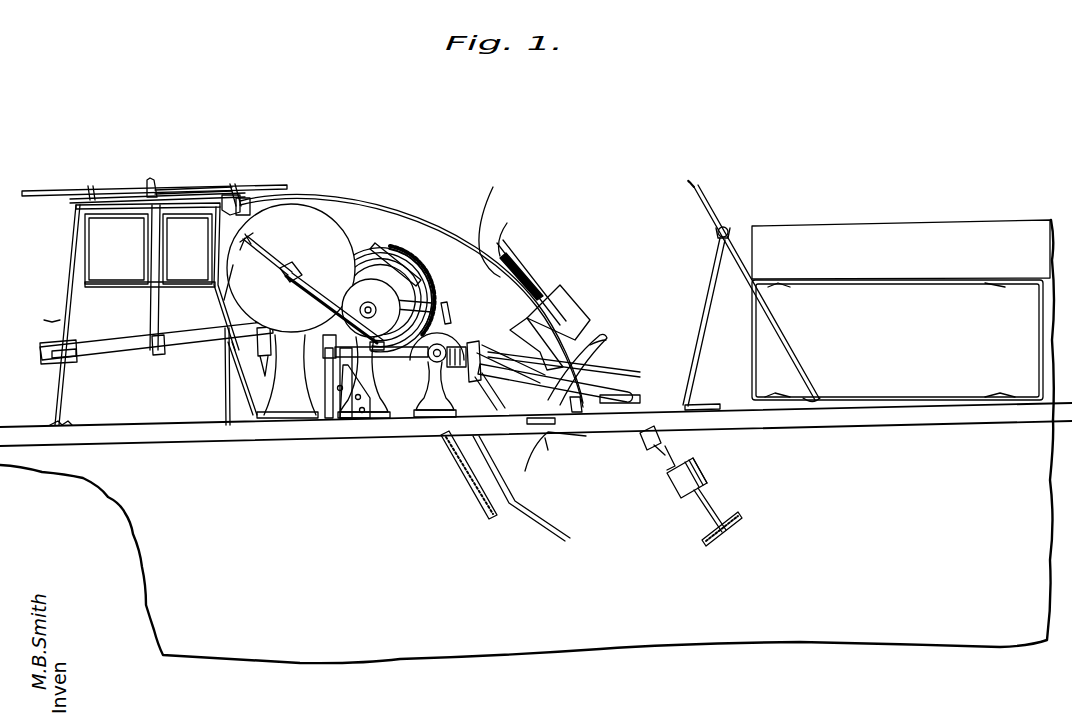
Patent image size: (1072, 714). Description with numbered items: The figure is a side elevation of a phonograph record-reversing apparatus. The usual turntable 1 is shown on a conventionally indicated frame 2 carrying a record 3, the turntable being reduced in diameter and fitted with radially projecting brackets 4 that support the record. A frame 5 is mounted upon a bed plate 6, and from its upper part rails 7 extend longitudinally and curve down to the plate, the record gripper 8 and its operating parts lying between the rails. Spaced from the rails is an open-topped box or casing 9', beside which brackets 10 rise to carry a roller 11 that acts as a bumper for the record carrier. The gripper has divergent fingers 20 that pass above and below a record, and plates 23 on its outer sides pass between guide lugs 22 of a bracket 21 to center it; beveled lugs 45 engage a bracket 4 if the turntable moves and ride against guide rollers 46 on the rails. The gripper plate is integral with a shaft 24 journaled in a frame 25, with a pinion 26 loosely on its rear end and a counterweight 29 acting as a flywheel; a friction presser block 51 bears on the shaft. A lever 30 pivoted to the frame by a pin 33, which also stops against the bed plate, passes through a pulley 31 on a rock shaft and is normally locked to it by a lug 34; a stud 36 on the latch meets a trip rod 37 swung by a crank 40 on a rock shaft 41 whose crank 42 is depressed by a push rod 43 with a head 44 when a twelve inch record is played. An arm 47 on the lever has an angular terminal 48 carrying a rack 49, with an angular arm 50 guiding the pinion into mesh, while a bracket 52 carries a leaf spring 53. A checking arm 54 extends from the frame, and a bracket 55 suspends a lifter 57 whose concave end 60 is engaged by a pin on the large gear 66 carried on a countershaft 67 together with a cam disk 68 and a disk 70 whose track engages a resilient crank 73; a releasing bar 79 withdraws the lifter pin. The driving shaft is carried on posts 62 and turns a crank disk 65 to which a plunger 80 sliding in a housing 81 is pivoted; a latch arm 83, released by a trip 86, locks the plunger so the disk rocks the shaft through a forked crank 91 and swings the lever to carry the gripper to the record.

The turntable 1 is at (70, 202).
The frame 2 is at (85, 252).
The record 3 is at (48, 173).
The brackets 4 is at (92, 185).
The frame 5 is at (42, 318).
The bed plate 6 is at (178, 440).
The rails 7 is at (448, 223).
The record gripper 8 is at (525, 258).
The box or casing 9' is at (901, 310).
The brackets 10 is at (792, 340).
The roller 11 is at (730, 229).
The divergent fingers 20 is at (514, 228).
The bracket 21 is at (238, 196).
The guide lugs 22 is at (328, 203).
The plates 23 is at (565, 300).
The shaft 24 is at (720, 500).
The frame 25 is at (600, 362).
The pinion 26 is at (742, 522).
The counterweight 29 is at (670, 490).
The lever 30 is at (498, 352).
The pulley or disk 31 is at (447, 340).
The pin 33 is at (630, 395).
The lug 34 is at (498, 445).
The stud 36 is at (447, 379).
The trip rod 37 is at (428, 290).
The crank 40 is at (262, 360).
The rock shaft 41 is at (118, 360).
The crank 42 is at (165, 356).
The push rod 43 is at (148, 185).
The head or button 44 is at (160, 190).
The beveled or pointed lugs 45 is at (530, 258).
The guide rollers 46 is at (495, 226).
The arm 47 is at (525, 425).
The angularly disposed terminal 48 is at (452, 455).
The rack 49 is at (494, 518).
The angular arm 50 is at (540, 489).
The friction presser block 51 is at (658, 448).
The bracket 52 is at (605, 334).
The leaf spring 53 is at (612, 340).
The angular checking arm 54 is at (648, 366).
The bracket 55 is at (540, 352).
The lifter 57 is at (553, 443).
The concave lower end 60 is at (552, 465).
The standards or posts 62 is at (305, 418).
The crank disk 65 is at (300, 213).
The large gear 66 is at (398, 258).
The countershaft 67 is at (356, 298).
The cam disk 68 is at (372, 300).
The disk 70 is at (418, 275).
The resilient crank 73 is at (452, 306).
The releasing bar 79 is at (364, 243).
The plunger 80 is at (270, 253).
The cylindrical housing 81 is at (310, 295).
The latch arm 83 is at (280, 275).
The trip 86 is at (336, 372).
The forked crank 91 is at (416, 360).